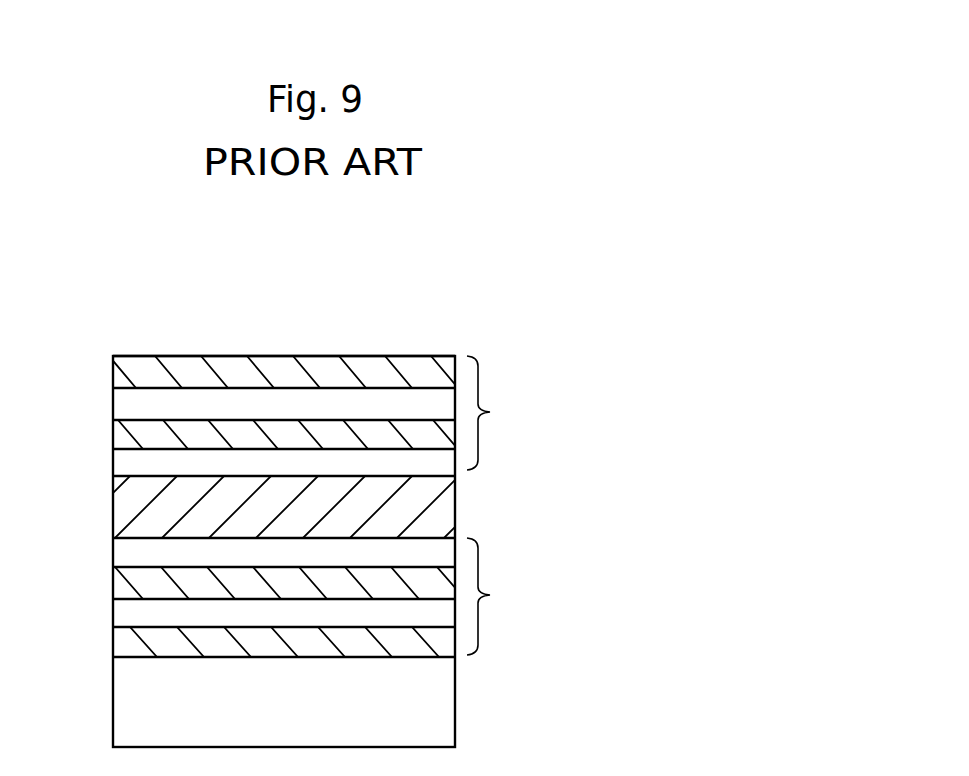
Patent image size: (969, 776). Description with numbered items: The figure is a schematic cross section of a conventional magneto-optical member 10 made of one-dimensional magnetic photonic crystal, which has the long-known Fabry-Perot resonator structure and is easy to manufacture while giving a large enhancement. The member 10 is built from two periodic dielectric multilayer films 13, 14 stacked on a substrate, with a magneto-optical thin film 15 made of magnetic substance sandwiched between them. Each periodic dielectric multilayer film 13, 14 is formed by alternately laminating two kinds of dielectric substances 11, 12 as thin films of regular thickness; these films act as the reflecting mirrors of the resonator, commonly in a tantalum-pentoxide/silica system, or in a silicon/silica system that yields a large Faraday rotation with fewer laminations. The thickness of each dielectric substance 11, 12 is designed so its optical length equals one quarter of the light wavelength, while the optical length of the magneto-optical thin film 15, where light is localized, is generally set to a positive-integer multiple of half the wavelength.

The magneto-optical member 10 is at (497, 296).
The dielectric substance 11 is at (187, 425).
The dielectric substance 12 is at (128, 460).
The periodic dielectric multilayer film 13 is at (462, 597).
The periodic dielectric multilayer film 14 is at (462, 413).
The magneto-optical thin film 15 is at (447, 505).